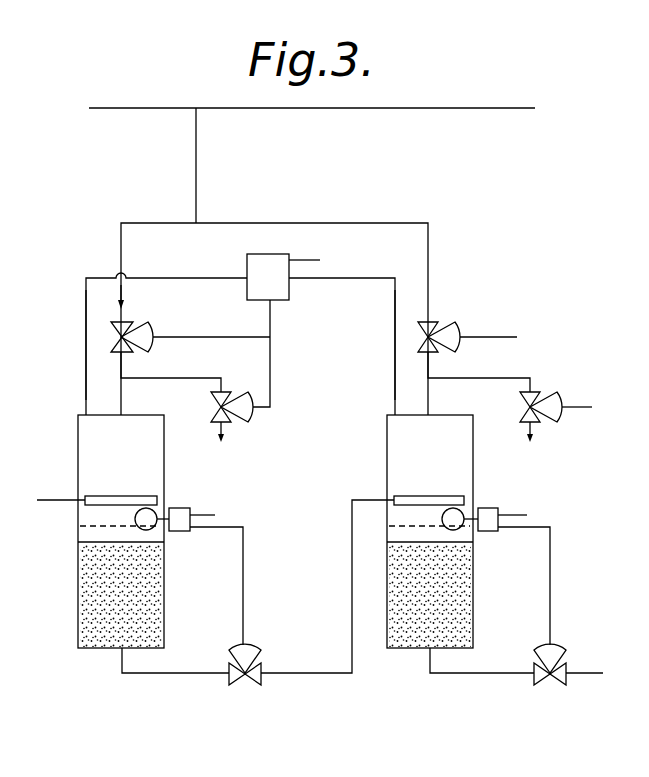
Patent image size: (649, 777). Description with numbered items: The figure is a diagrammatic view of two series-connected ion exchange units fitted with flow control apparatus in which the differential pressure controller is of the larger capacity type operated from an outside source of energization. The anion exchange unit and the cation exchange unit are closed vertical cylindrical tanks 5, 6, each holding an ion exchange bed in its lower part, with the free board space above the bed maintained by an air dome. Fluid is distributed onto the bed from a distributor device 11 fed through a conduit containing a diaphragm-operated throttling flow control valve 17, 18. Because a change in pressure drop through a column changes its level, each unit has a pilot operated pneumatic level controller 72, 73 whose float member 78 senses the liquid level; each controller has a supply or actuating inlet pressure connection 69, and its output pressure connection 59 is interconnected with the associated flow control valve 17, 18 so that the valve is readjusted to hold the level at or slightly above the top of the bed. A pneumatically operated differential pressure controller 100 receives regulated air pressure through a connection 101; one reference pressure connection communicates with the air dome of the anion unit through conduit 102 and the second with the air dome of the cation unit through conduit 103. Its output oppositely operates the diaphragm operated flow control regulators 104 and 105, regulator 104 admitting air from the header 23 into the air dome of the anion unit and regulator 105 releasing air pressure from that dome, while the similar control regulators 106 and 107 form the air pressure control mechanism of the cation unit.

The header 23 is at (392, 107).
The differential pressure controller 100 is at (247, 263).
The connection 101 is at (308, 260).
The conduit 102 is at (86, 318).
The conduit 103 is at (395, 352).
The flow control regulator 104 is at (152, 331).
The flow control regulator 105 is at (254, 421).
The control regulator 106 is at (459, 329).
The control regulator 107 is at (560, 398).
The tank 5 is at (78, 452).
The tank 6 is at (387, 453).
The distributor device 11 is at (117, 497).
The float member 78 is at (135, 519).
The level controller 72 is at (184, 508).
The level controller 73 is at (491, 508).
The supply or actuating inlet pressure connection 69 is at (215, 515).
The output pressure connection 59 is at (243, 574).
The flow control valve 17 is at (253, 648).
The flow control valve 18 is at (560, 648).